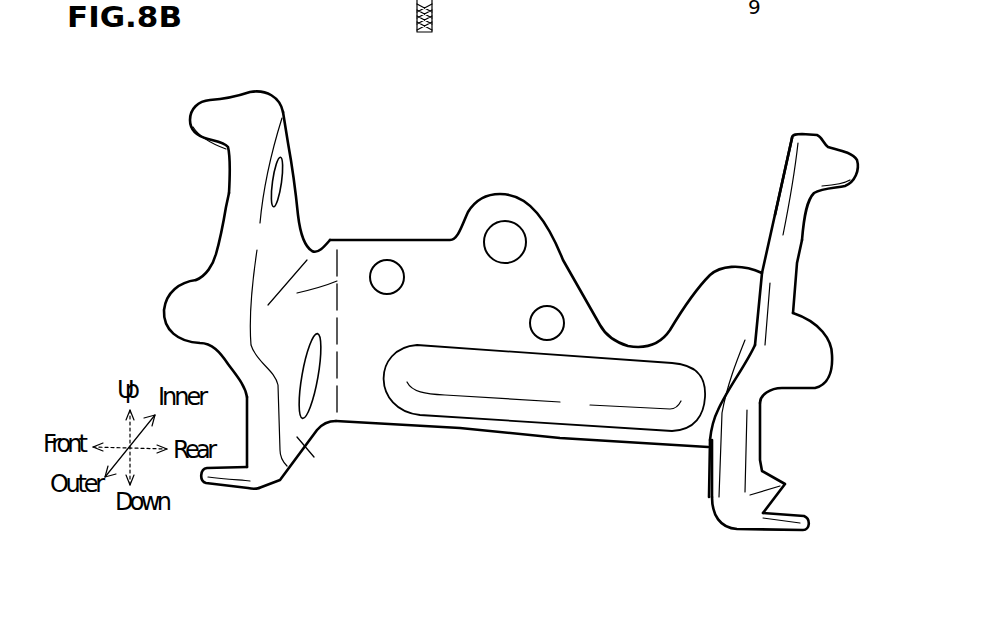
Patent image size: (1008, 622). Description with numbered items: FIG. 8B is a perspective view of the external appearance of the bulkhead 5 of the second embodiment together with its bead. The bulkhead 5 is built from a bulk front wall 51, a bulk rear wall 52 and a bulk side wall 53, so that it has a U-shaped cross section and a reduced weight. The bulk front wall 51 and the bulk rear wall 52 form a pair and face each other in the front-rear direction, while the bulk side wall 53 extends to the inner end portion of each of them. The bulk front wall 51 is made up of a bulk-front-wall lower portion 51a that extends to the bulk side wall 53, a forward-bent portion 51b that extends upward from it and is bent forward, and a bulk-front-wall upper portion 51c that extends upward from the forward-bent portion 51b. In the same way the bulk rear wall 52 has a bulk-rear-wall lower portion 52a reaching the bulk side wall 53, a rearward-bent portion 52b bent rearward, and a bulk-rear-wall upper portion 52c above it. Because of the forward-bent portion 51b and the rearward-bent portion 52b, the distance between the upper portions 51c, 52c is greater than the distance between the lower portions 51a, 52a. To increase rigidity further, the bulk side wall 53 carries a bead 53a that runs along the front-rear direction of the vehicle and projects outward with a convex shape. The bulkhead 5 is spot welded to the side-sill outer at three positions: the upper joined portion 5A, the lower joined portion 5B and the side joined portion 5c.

The bulkhead 5 is at (463, 455).
The upper joined portion 5A is at (215, 115).
The lower joined portion 5B is at (192, 296).
The side joined portion 5c is at (216, 490).
The bulk front wall 51 is at (222, 203).
The bulk-front-wall lower portion 51a is at (314, 457).
The forward-bent portion 51b is at (343, 272).
The bulk-front-wall upper portion 51c is at (286, 144).
The bulk rear wall 52 is at (800, 271).
The bulk-rear-wall lower portion 52a is at (714, 490).
The rearward-bent portion 52b is at (746, 364).
The bulk-rear-wall upper portion 52c is at (778, 181).
The bulk side wall 53 is at (560, 243).
The bead 53a is at (590, 410).